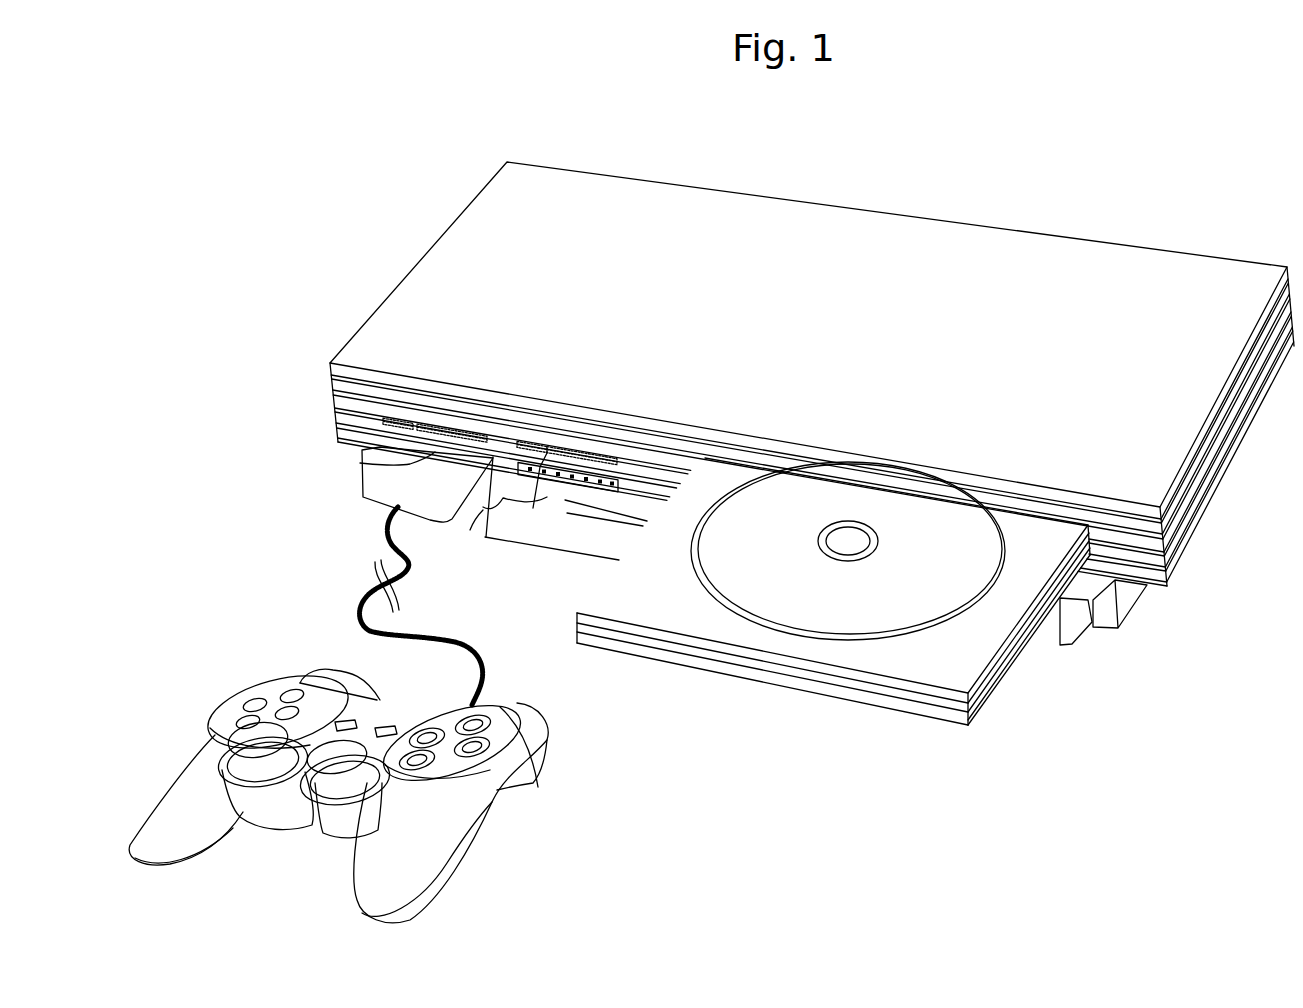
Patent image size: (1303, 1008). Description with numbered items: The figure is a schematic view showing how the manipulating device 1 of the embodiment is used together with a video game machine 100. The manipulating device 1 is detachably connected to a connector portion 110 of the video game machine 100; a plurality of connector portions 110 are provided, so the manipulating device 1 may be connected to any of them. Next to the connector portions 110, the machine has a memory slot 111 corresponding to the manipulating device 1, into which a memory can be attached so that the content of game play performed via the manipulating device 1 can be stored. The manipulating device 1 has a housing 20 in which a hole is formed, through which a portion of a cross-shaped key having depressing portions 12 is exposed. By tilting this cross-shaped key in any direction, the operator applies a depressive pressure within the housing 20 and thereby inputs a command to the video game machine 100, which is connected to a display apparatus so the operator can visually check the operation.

The manipulating device 1 is at (288, 873).
The video game machine 100 is at (920, 205).
The connector portion 110 is at (363, 460).
The memory slot 111 is at (365, 445).
The housing 20 is at (463, 822).
The depressing portions 12 is at (292, 690).